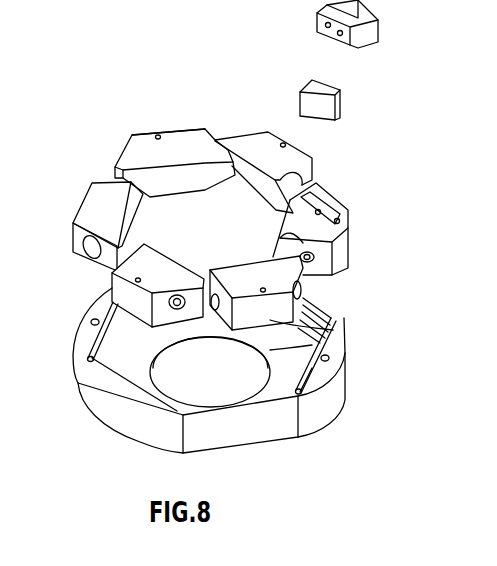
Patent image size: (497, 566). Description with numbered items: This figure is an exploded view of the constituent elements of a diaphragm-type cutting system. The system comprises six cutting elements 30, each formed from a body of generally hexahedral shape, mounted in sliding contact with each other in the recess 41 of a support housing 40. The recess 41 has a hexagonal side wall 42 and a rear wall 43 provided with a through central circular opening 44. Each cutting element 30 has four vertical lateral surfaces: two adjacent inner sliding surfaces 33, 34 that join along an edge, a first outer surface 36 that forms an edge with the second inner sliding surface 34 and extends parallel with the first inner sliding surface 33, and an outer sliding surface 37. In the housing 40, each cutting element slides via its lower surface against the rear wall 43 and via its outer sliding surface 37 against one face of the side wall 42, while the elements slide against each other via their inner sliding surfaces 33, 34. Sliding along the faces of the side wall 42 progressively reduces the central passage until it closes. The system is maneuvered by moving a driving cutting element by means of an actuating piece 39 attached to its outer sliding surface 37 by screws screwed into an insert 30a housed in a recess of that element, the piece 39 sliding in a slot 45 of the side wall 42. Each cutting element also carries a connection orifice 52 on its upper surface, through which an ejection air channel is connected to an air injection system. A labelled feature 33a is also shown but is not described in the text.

The cutting element 30 is at (137, 152).
The insert 30a is at (312, 87).
The first inner sliding surface 33 is at (173, 175).
The slotted block 33a is at (298, 182).
The second inner sliding surface 34 is at (220, 143).
The first outer surface 36 is at (138, 132).
The outer sliding surface 37 is at (122, 162).
The actuating piece 39 is at (320, 23).
The support housing 40 is at (334, 402).
The recess 41 is at (117, 368).
The hexagonal side wall 42 is at (110, 343).
The rear wall 43 is at (295, 382).
The through central circular opening 44 is at (316, 344).
The slot 45 is at (332, 320).
The connection orifice 52 is at (92, 205).